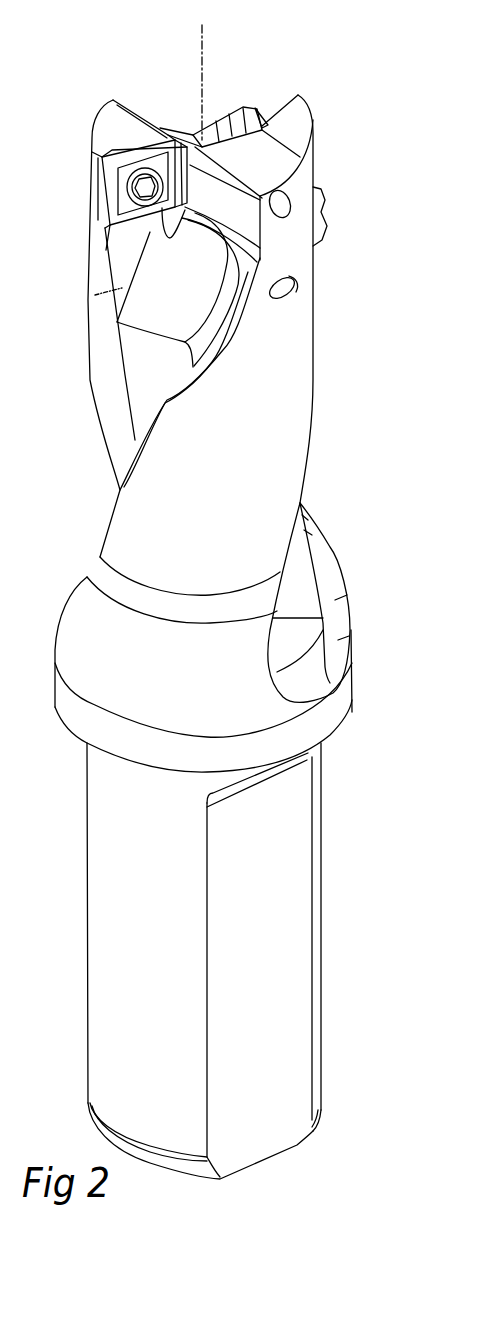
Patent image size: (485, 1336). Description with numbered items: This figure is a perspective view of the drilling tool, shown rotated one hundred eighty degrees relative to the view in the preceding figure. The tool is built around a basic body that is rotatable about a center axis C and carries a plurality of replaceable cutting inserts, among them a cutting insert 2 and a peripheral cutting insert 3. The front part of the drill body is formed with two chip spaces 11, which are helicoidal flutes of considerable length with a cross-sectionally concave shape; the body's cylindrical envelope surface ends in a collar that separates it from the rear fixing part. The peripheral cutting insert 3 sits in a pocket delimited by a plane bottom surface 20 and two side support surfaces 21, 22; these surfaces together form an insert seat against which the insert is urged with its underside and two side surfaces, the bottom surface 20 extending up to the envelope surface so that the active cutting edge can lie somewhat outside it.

The replaceable cutting insert 2 is at (243, 110).
The peripheral cutting insert 3 is at (103, 219).
The chip space 11 is at (113, 400).
The bottom surface 20 is at (130, 143).
The side support surface 21 is at (168, 137).
The side support surface 22 is at (128, 224).
The center axis C is at (205, 62).